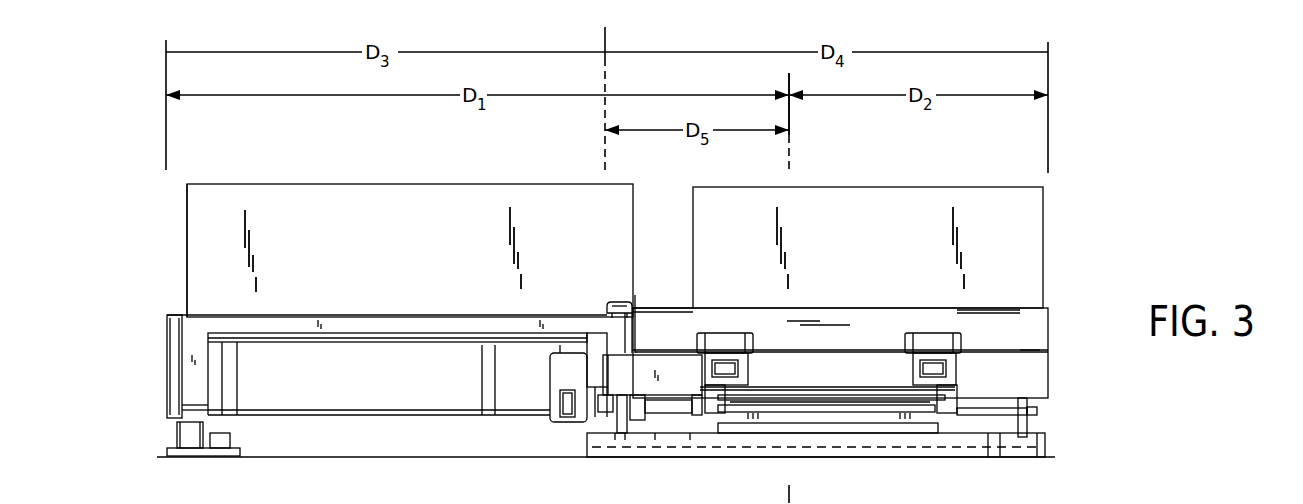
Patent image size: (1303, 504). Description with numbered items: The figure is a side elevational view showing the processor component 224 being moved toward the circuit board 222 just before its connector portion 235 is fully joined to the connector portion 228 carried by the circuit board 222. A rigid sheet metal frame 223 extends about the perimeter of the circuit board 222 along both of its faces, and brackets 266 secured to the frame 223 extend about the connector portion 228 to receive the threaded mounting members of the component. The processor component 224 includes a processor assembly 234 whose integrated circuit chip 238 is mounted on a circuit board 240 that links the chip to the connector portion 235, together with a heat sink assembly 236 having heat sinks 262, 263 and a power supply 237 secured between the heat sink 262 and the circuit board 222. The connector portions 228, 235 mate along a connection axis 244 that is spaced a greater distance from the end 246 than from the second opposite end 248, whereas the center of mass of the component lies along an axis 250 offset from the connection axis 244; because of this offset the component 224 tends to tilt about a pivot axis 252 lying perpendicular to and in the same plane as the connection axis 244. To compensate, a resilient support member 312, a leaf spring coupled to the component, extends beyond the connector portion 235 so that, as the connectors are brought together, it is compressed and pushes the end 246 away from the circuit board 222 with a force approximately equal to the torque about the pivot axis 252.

The circuit board 222 is at (310, 457).
The frame 223 is at (170, 447).
The processor component 224 is at (292, 178).
The connector portion 228 is at (757, 432).
The processor assembly 234 is at (1048, 418).
The connector portion 235 is at (743, 418).
The heat sink assembly 236 is at (187, 285).
The power supply 237 is at (285, 343).
The integrated circuit chip 238 is at (935, 404).
The circuit board 240 is at (860, 411).
The connection axis 244 is at (789, 117).
The end 246 is at (112, 203).
The second opposite end 248 is at (1082, 185).
The axis 250 is at (605, 167).
The pivot axis 252 is at (805, 411).
The heat sink 262 is at (400, 190).
The heat sink 263 is at (935, 188).
The brackets 266 is at (1047, 445).
The resilient support member 312 is at (177, 428).